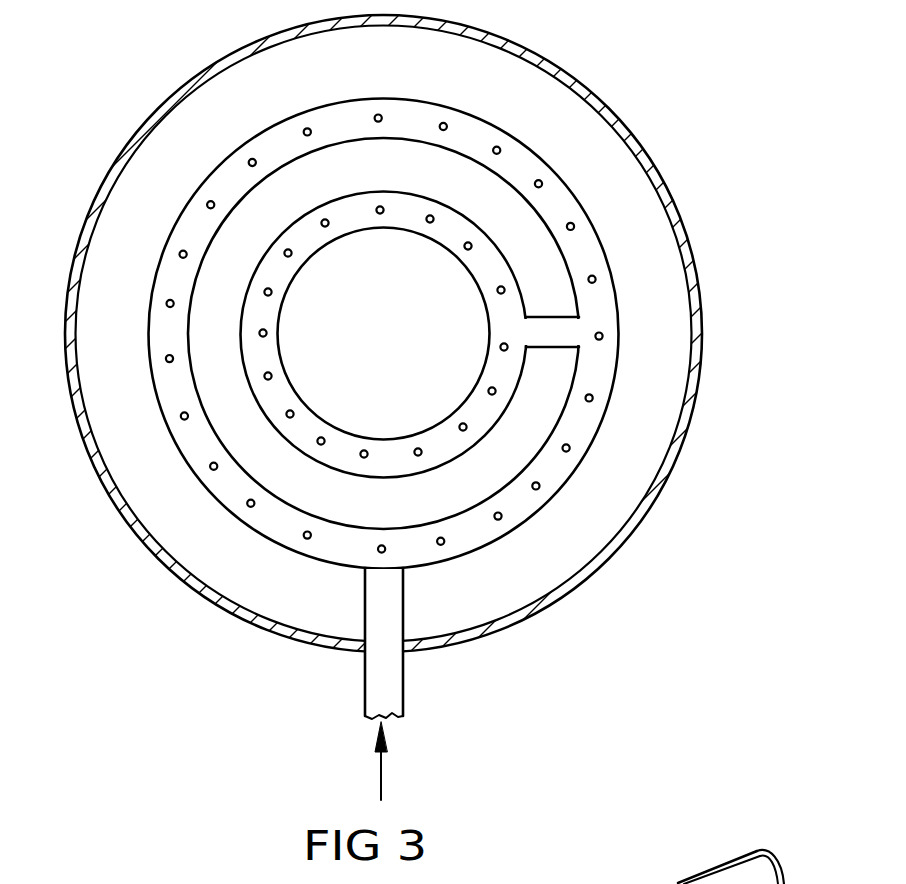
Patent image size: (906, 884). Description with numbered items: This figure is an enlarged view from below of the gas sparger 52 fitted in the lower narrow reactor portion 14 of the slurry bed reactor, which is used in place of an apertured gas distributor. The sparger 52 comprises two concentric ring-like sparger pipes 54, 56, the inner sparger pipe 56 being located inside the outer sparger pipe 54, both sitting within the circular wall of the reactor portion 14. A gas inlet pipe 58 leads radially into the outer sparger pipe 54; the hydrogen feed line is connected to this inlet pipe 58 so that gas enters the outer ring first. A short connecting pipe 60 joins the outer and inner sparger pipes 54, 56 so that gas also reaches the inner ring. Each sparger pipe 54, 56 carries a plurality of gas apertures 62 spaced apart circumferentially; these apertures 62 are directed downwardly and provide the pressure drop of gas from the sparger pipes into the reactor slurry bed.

The lower narrow reactor portion 14 is at (630, 521).
The gas sparger 52 is at (450, 284).
The outer sparger pipe 54 is at (432, 122).
The inner sparger pipe 56 is at (412, 212).
The gas inlet pipe 58 is at (366, 604).
The connecting pipe 60 is at (559, 334).
The gas apertures 62 is at (265, 381).